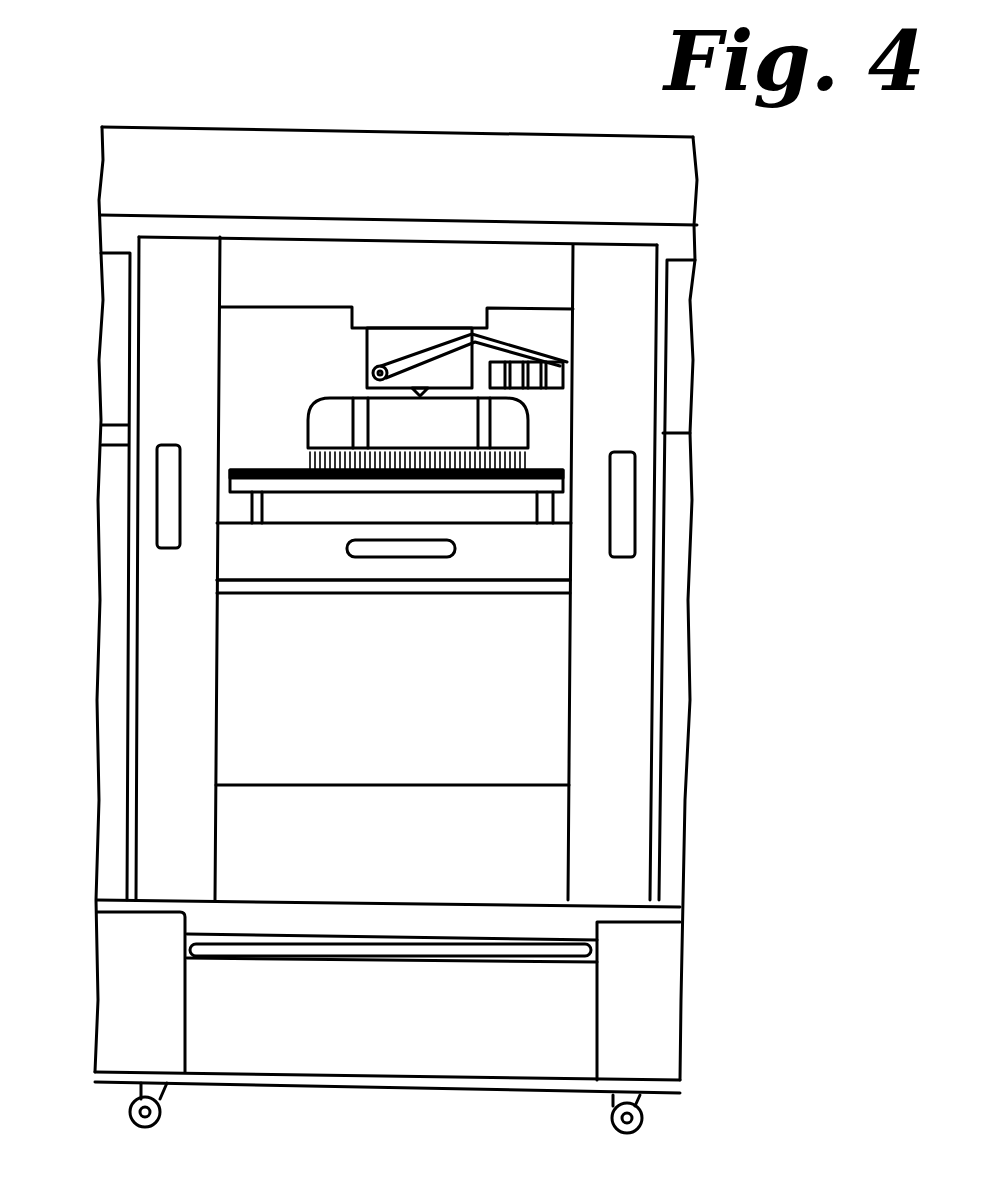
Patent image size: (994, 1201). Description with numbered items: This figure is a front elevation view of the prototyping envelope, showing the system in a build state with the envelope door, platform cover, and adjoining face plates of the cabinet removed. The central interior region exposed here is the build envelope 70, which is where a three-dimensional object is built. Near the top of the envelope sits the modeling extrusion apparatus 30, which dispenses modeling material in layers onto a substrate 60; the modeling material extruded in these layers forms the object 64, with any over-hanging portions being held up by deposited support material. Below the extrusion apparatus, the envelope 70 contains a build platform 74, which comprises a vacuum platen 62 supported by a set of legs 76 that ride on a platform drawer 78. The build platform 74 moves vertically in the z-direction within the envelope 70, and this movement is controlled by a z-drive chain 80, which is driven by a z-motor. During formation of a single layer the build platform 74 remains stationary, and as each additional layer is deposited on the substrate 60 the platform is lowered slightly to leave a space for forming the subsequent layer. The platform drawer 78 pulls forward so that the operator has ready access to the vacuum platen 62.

The modeling extrusion apparatus 30 is at (527, 330).
The substrate 60 is at (543, 467).
The vacuum platen 62 is at (563, 487).
The object 64 is at (338, 427).
The build envelope 70 is at (538, 712).
The build platform 74 is at (267, 545).
The legs 76 is at (550, 512).
The platform drawer 78 is at (553, 562).
The z-drive chain 80 is at (547, 960).